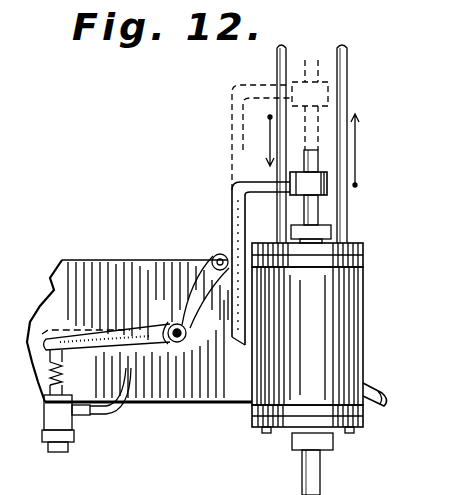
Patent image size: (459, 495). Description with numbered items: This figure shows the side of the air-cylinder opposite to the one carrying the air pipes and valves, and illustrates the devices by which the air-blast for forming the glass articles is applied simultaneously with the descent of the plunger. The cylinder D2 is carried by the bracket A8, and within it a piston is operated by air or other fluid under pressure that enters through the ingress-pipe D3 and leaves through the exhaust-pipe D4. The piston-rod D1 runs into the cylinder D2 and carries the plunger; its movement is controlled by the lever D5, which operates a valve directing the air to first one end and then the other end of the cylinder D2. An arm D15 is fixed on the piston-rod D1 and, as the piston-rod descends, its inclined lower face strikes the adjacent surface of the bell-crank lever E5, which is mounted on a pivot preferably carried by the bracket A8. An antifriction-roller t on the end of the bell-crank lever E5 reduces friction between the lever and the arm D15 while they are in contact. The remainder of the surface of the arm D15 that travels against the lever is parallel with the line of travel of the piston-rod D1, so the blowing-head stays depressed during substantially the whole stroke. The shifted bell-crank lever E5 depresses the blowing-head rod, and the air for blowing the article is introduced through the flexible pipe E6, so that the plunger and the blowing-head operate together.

The bracket A8 is at (170, 403).
The bell-crank lever E5 is at (191, 278).
The antifriction-roller t is at (217, 255).
The flexible pipe E6 is at (92, 411).
The arm D15 is at (232, 202).
The ingress-pipe D3 is at (277, 66).
The exhaust-pipe D4 is at (347, 84).
The piston-rod D1 is at (320, 210).
The cylinder D2 is at (307, 338).
The lever D5 is at (379, 391).